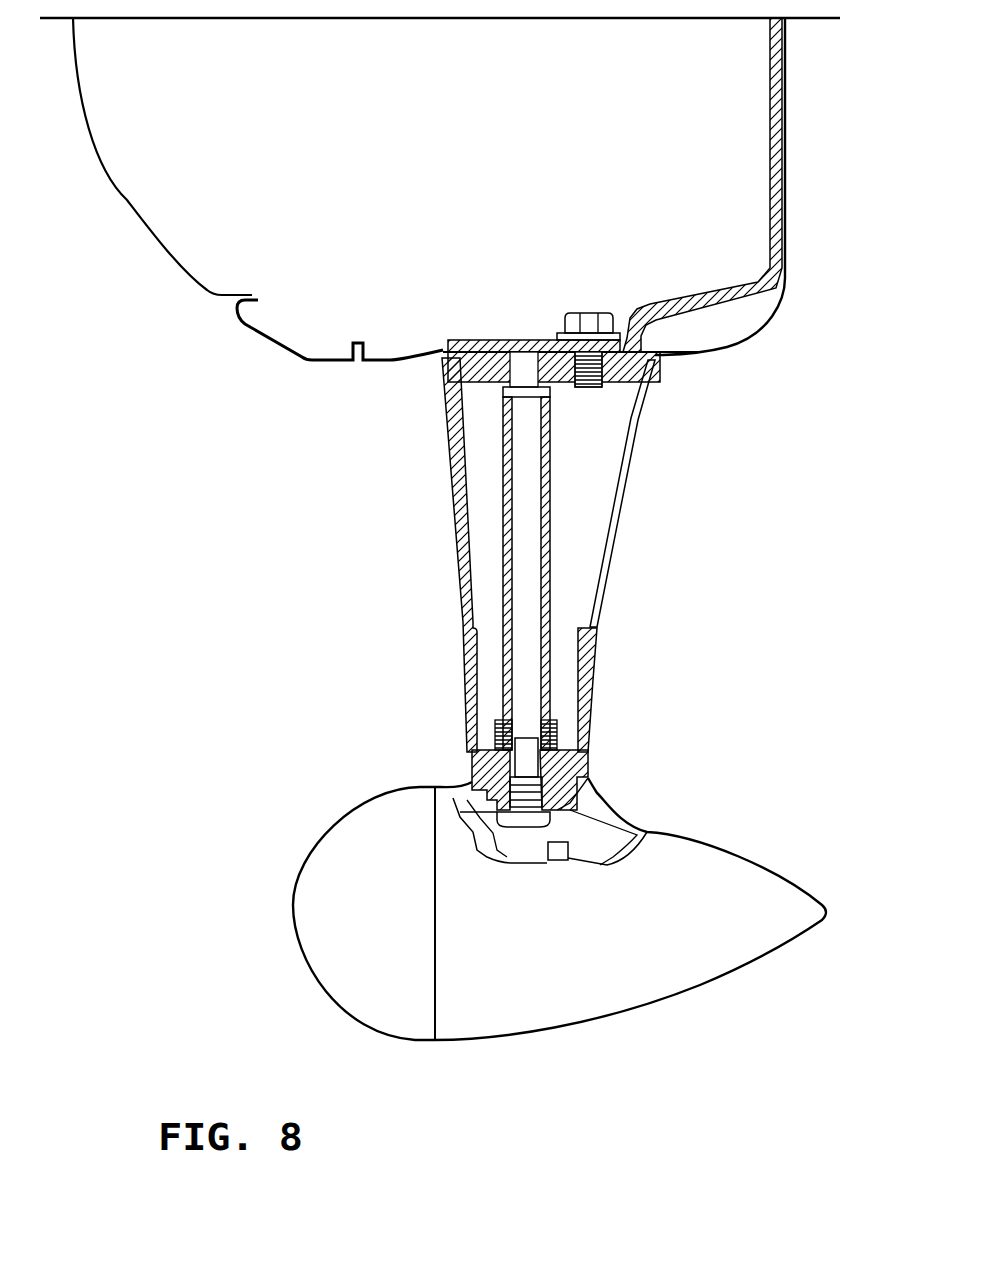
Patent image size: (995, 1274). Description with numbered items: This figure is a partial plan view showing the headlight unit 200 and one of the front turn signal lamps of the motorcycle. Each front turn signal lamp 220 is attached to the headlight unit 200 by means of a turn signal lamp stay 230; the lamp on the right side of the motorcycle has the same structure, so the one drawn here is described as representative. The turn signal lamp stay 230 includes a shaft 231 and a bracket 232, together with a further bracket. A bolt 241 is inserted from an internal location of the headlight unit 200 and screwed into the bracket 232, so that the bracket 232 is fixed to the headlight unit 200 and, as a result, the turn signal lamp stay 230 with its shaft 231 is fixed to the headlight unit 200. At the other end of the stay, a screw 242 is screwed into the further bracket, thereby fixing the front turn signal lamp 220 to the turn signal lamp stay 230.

The headlight unit 200 is at (745, 106).
The front turn signal lamp 220 is at (573, 1005).
The turn signal lamp stay 230 is at (620, 517).
The shaft 231 is at (550, 460).
The bracket 232 is at (460, 371).
The bolt 241 is at (590, 318).
The screw 242 is at (540, 822).